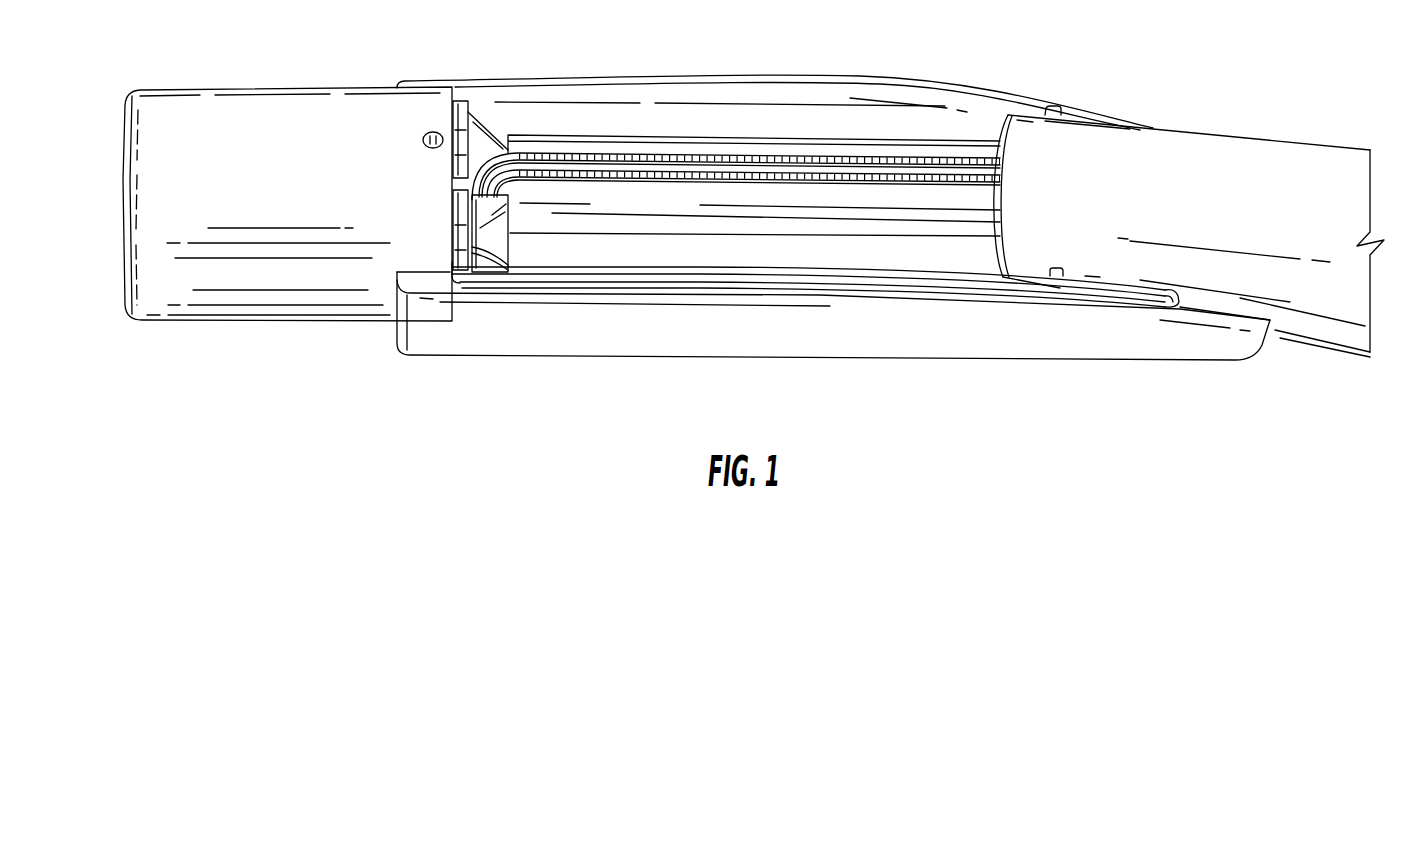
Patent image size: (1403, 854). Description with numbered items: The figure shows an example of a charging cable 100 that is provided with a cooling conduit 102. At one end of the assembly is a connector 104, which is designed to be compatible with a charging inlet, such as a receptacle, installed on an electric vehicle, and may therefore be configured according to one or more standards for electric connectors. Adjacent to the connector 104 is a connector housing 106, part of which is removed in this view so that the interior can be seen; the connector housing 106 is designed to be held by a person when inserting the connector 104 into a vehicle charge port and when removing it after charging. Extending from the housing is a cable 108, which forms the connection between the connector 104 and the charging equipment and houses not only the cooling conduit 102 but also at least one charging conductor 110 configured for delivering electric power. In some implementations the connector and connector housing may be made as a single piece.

The charging cable 100 is at (1106, 437).
The cooling conduit 102 is at (577, 186).
The connector 104 is at (271, 85).
The connector housing 106 is at (525, 354).
The cable 108 is at (1312, 340).
The charging conductor 110 is at (574, 258).